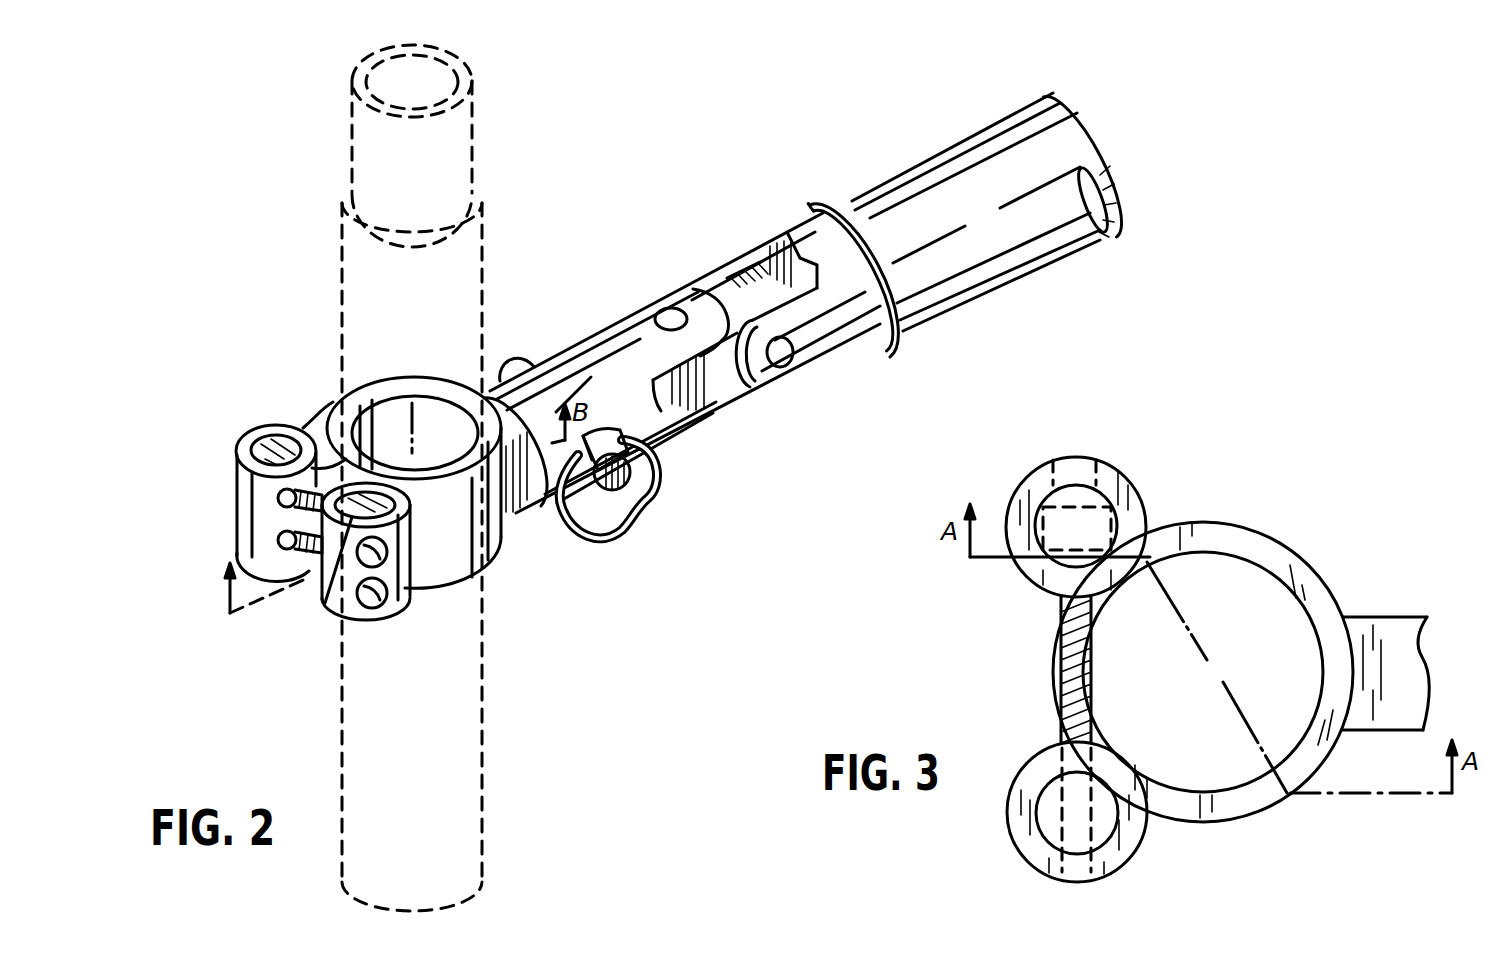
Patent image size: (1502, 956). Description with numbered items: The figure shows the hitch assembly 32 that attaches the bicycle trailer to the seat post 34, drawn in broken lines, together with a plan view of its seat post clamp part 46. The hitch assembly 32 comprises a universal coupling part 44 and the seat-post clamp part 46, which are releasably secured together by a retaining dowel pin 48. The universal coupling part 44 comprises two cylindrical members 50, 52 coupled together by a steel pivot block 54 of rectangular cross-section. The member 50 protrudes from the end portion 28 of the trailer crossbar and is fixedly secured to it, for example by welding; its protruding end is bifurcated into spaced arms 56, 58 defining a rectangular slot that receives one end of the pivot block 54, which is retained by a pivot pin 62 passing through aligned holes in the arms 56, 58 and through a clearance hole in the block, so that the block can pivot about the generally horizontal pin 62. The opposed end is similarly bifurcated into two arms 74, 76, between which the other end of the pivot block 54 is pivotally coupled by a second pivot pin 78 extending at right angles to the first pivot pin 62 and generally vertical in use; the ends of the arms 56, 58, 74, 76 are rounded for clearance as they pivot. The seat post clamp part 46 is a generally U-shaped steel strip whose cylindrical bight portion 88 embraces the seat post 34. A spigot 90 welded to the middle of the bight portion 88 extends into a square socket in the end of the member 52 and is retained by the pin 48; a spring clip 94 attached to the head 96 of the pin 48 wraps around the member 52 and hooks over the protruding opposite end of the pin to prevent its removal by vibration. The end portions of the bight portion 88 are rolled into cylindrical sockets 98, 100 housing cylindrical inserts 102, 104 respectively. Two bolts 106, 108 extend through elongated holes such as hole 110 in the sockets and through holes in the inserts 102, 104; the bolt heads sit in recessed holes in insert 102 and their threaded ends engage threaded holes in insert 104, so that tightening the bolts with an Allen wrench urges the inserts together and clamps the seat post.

In FIG. 2, the end portion of crossbar 28 is at (997, 120).
In FIG. 2, the hitch assembly 32 is at (818, 212).
In FIG. 2, the seat post 34 is at (341, 262).
In FIG. 2, the universal coupling part 44 is at (651, 246).
In FIG. 2, the seat-post clamp part 46 is at (322, 378).
In FIG. 2, the dowel pin 48 is at (510, 357).
In FIG. 2, the cylindrical member 50 is at (880, 328).
In FIG. 2, the cylindrical member 52 is at (607, 353).
In FIG. 2, the pivot block 54 is at (720, 392).
In FIG. 2, the arm 56 is at (826, 338).
In FIG. 2, the arm 58 is at (733, 262).
In FIG. 2, the pivot pin 62 is at (790, 360).
In FIG. 2, the arm 74 is at (702, 418).
In FIG. 2, the arm 76 is at (641, 310).
In FIG. 2, the second pivot pin 78 is at (672, 308).
In FIG. 2, the cylindrical bight portion 88 is at (484, 560).
In FIG. 3, the cylindrical bight portion 88 is at (1313, 568).
In FIG. 3, the spigot 90 is at (1413, 617).
In FIG. 2, the spring clip 94 is at (606, 549).
In FIG. 2, the head of pin 96 is at (636, 484).
In FIG. 2, the cylindrical socket 98 is at (349, 608).
In FIG. 2, the cylindrical socket 100 is at (262, 503).
In FIG. 2, the cylindrical insert 102 is at (323, 590).
In FIG. 3, the cylindrical insert 102 is at (1048, 812).
In FIG. 2, the cylindrical insert 104 is at (277, 437).
In FIG. 3, the cylindrical insert 104 is at (1036, 568).
In FIG. 2, the bolt 106 is at (247, 561).
In FIG. 2, the bolt 108 is at (236, 503).
In FIG. 3, the bolt 108 is at (1061, 657).
In FIG. 2, the hole 110 is at (280, 494).